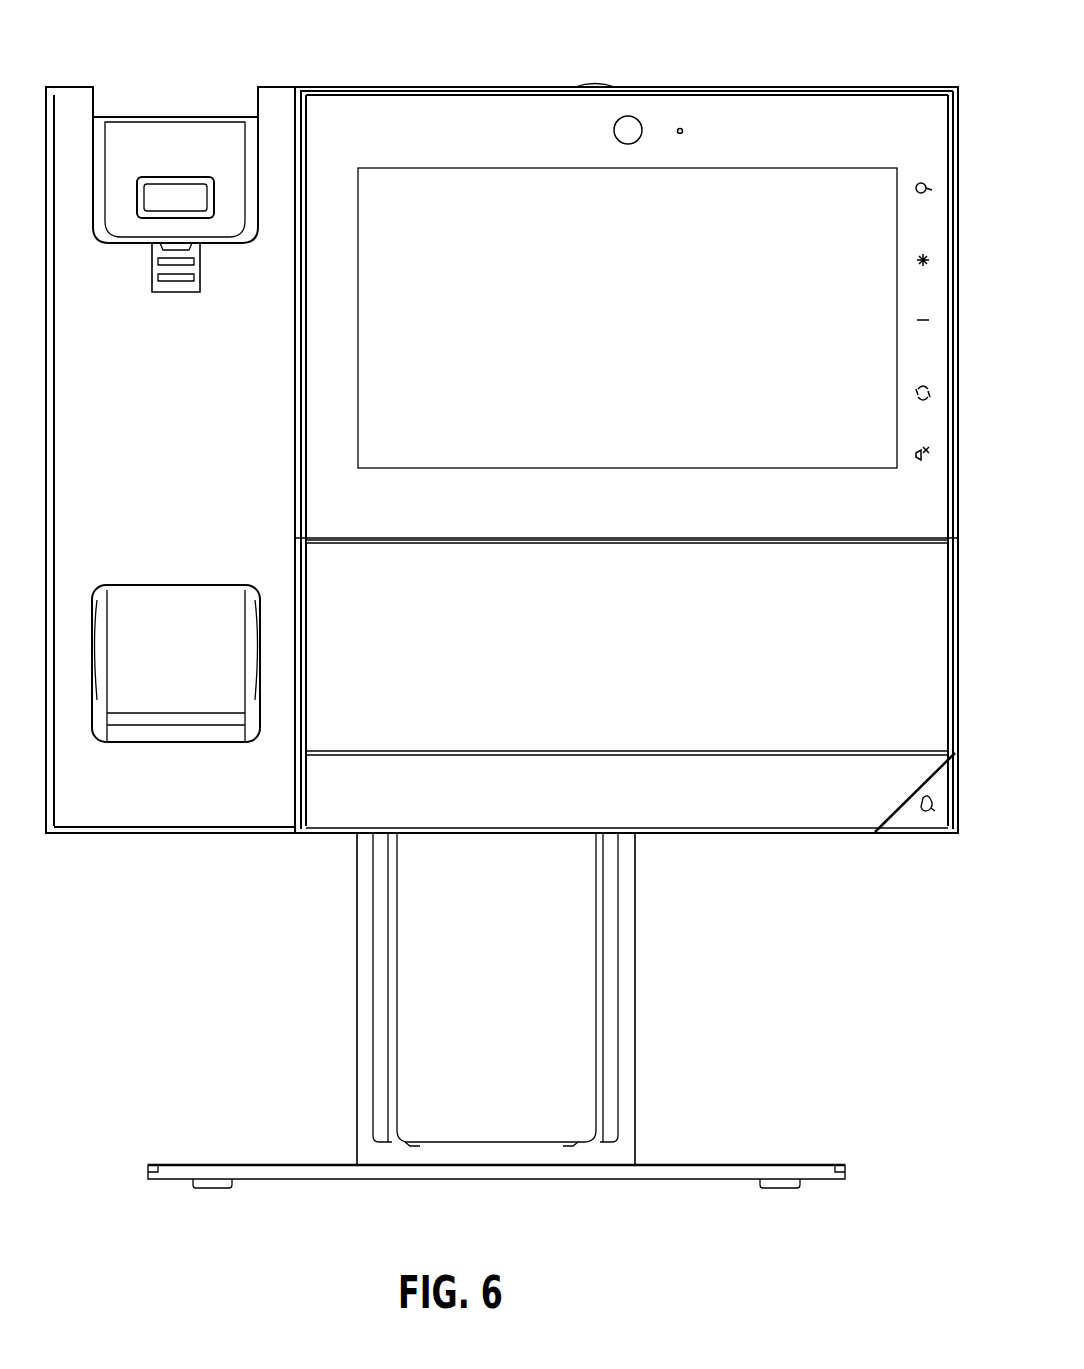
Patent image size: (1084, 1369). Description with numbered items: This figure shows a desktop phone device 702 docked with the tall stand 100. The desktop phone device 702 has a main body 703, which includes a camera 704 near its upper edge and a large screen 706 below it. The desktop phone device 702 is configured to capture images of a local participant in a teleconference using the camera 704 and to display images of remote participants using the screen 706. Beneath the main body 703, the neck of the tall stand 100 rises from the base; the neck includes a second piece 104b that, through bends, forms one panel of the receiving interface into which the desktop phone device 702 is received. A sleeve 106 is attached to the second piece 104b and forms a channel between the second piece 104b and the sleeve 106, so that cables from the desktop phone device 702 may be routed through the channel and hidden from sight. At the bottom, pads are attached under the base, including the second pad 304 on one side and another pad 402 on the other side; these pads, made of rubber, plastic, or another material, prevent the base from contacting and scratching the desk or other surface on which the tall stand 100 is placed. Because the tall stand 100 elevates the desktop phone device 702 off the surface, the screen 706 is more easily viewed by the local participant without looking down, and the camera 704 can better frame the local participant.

The tall stand 100 is at (290, 963).
The desktop phone device 702 is at (480, 58).
The main body 703 is at (725, 87).
The camera 704 is at (616, 128).
The screen 706 is at (594, 165).
The second piece 104b is at (628, 950).
The sleeve 106 is at (577, 1010).
The second pad 304 is at (215, 1184).
The pad 402 is at (775, 1186).